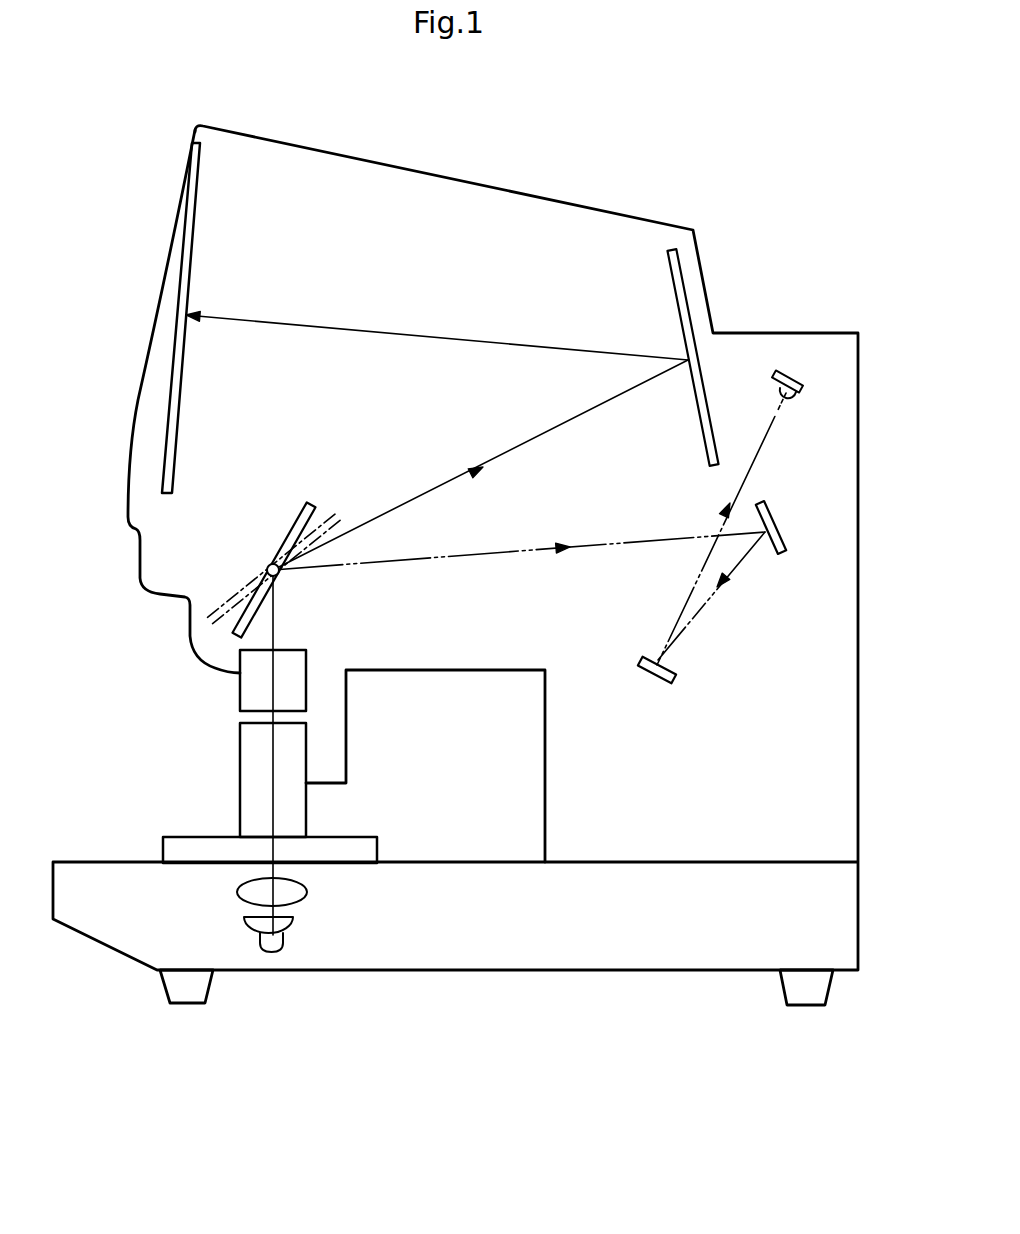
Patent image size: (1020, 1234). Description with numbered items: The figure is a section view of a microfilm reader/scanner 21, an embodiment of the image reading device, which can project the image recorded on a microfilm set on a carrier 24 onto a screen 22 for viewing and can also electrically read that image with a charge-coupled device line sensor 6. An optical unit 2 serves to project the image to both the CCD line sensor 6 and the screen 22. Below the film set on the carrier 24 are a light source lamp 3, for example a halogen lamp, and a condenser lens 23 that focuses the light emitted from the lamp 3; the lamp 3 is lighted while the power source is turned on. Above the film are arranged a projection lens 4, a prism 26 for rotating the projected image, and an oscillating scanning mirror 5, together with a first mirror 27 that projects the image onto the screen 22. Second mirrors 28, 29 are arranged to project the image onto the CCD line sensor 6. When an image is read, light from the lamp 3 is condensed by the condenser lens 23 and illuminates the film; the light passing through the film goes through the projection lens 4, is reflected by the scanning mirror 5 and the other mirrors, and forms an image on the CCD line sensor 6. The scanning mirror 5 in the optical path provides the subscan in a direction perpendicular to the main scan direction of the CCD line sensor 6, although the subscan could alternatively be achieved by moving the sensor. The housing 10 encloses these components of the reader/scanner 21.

The optical unit 2 is at (532, 411).
The light source lamp 3 is at (270, 950).
The projection lens 4 is at (248, 765).
The scanning mirror 5 is at (292, 527).
The CCD line sensor 6 is at (787, 380).
The housing 10 is at (745, 348).
The reader/scanner 21 is at (565, 190).
The screen 22 is at (188, 182).
The condenser lens 23 is at (292, 897).
The carrier 24 is at (210, 848).
The prism 26 is at (247, 693).
The first mirror 27 is at (682, 275).
The second mirror 28 is at (775, 523).
The second mirror 29 is at (657, 673).